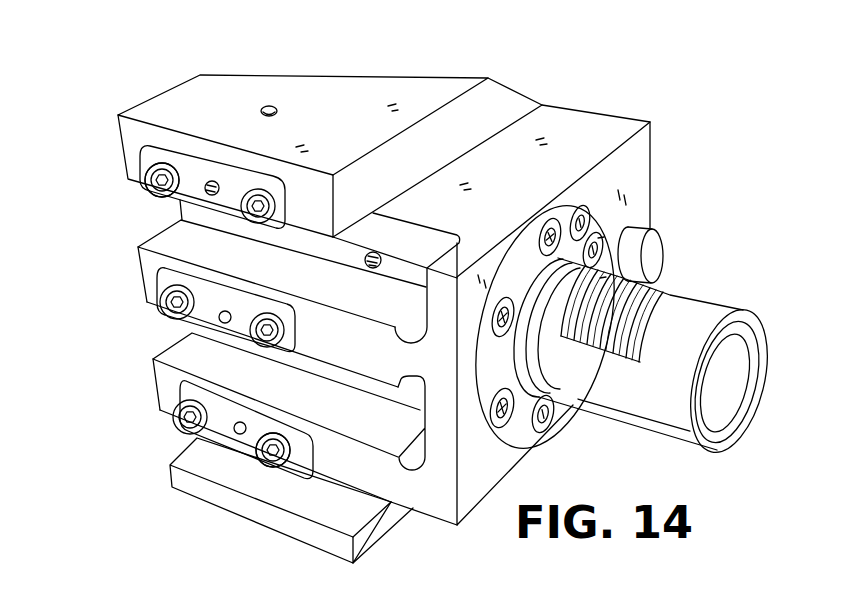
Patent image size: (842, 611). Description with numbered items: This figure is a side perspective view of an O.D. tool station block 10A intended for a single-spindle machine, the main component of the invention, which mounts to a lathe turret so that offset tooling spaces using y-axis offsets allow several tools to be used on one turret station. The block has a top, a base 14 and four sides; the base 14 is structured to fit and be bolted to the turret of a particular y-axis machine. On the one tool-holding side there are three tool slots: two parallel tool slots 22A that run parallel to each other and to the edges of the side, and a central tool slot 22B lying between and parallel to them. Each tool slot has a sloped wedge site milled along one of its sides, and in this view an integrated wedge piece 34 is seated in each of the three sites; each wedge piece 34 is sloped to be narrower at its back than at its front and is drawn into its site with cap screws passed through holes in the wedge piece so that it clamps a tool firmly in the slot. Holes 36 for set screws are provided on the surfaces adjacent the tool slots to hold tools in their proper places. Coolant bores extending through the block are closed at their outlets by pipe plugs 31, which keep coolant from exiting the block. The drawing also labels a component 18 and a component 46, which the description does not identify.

The tool station block 10A is at (595, 82).
The base 14 is at (648, 184).
The top plate 18 is at (413, 92).
The tool slots 22A is at (157, 220).
The central tool slot 22B is at (160, 328).
The pipe plugs 31 is at (282, 110).
The wedge piece 34 is at (209, 172).
The holes for set screws 36 is at (143, 181).
The shank 46 is at (700, 323).